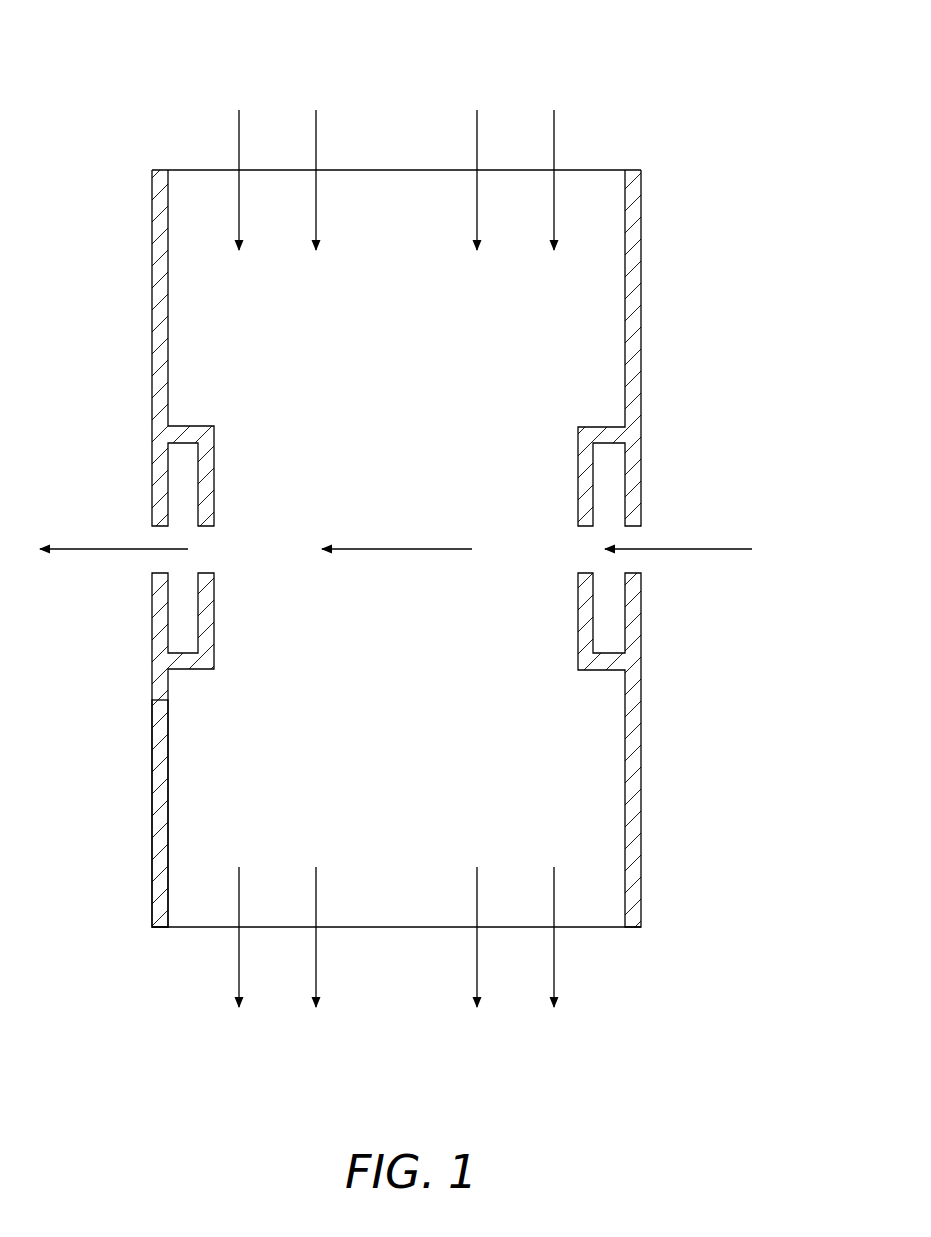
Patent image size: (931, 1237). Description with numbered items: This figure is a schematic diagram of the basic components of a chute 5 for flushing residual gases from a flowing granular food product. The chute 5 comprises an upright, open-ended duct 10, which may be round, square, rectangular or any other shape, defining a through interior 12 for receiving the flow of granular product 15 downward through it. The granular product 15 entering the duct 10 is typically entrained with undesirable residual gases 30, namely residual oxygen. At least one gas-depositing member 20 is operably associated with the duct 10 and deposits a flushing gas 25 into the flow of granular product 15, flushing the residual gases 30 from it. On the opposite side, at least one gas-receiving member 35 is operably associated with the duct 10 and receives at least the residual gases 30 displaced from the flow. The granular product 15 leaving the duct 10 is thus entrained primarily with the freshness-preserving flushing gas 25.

The chute 5 is at (710, 50).
The duct 10 is at (642, 276).
The through interior 12 is at (185, 871).
The granular product 15 is at (238, 143).
The gas-depositing member 20 is at (605, 427).
The flushing gas 25 is at (686, 551).
The residual gases 30 is at (113, 550).
The gas-receiving member 35 is at (188, 426).